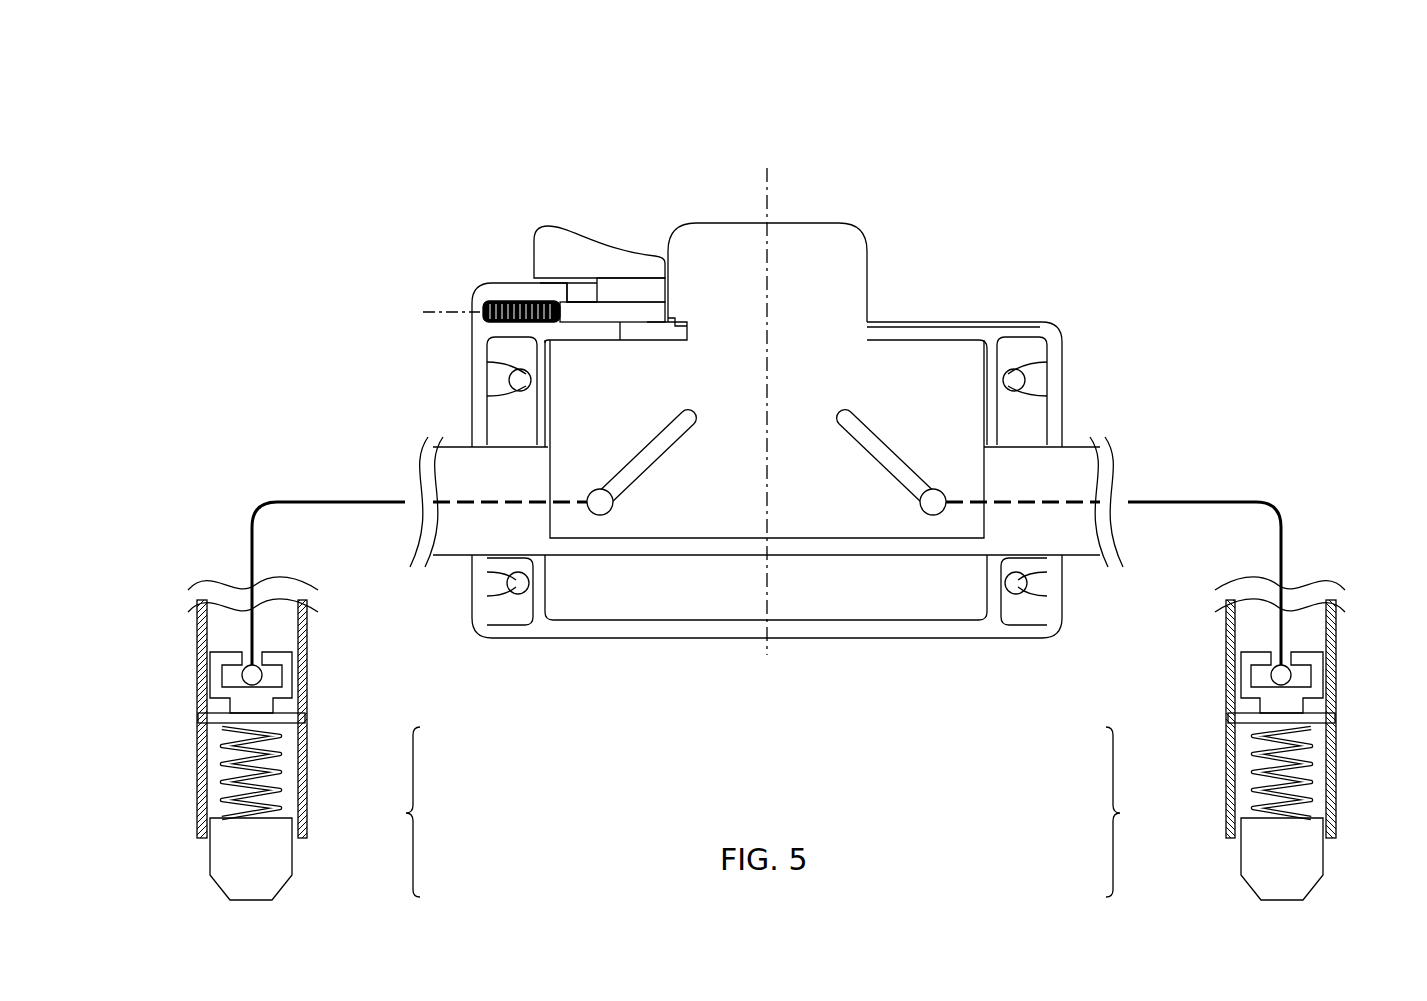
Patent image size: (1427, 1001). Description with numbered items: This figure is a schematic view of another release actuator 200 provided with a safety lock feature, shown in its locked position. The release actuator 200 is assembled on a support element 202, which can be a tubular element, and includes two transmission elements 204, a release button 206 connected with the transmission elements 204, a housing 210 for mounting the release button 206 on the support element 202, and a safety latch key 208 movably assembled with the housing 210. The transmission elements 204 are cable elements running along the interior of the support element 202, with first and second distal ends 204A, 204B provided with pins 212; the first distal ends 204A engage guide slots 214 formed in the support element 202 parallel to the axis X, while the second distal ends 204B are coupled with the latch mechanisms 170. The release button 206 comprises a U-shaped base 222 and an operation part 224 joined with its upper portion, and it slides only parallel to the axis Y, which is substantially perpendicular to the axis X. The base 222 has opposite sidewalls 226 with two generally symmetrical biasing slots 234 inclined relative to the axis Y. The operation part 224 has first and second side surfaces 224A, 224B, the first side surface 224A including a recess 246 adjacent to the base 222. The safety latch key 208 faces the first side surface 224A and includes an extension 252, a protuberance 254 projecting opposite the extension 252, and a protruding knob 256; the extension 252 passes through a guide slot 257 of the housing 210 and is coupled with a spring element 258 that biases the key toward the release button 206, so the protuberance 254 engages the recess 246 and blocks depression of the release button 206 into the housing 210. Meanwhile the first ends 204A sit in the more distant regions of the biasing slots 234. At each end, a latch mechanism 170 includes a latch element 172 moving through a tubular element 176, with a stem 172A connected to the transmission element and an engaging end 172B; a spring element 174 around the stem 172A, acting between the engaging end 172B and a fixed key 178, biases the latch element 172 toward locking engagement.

The release actuator 200 is at (1200, 133).
The release button 206 is at (915, 197).
The safety latch key 208 is at (520, 218).
The housing 210 is at (1027, 632).
The support element 202 is at (1078, 550).
The transmission elements 204 is at (252, 498).
The first distal ends 204A is at (622, 520).
The second distal ends 204B is at (245, 677).
The pins 212 is at (600, 515).
The guide slots 214 is at (548, 463).
The U-shaped base 222 is at (947, 355).
The operation part 224 is at (728, 230).
The first side surface 224A is at (667, 240).
The second side surface 224B is at (868, 290).
The sidewalls 226 is at (727, 530).
The biasing slots 234 is at (672, 405).
The recess 246 is at (692, 322).
The extension 252 is at (578, 312).
The protuberance 254 is at (667, 333).
The protruding knob 256 is at (545, 228).
The guide slot 257 is at (507, 284).
The spring element 258 is at (487, 320).
The latch mechanisms 170 is at (462, 755).
The latch element 172 is at (763, 812).
The stem 172A is at (268, 768).
The engaging end 172B is at (275, 868).
The spring element 174 is at (278, 793).
The tubular element 176 is at (197, 820).
The fixed key 178 is at (305, 717).
The axis X is at (442, 312).
The axis Y is at (768, 188).